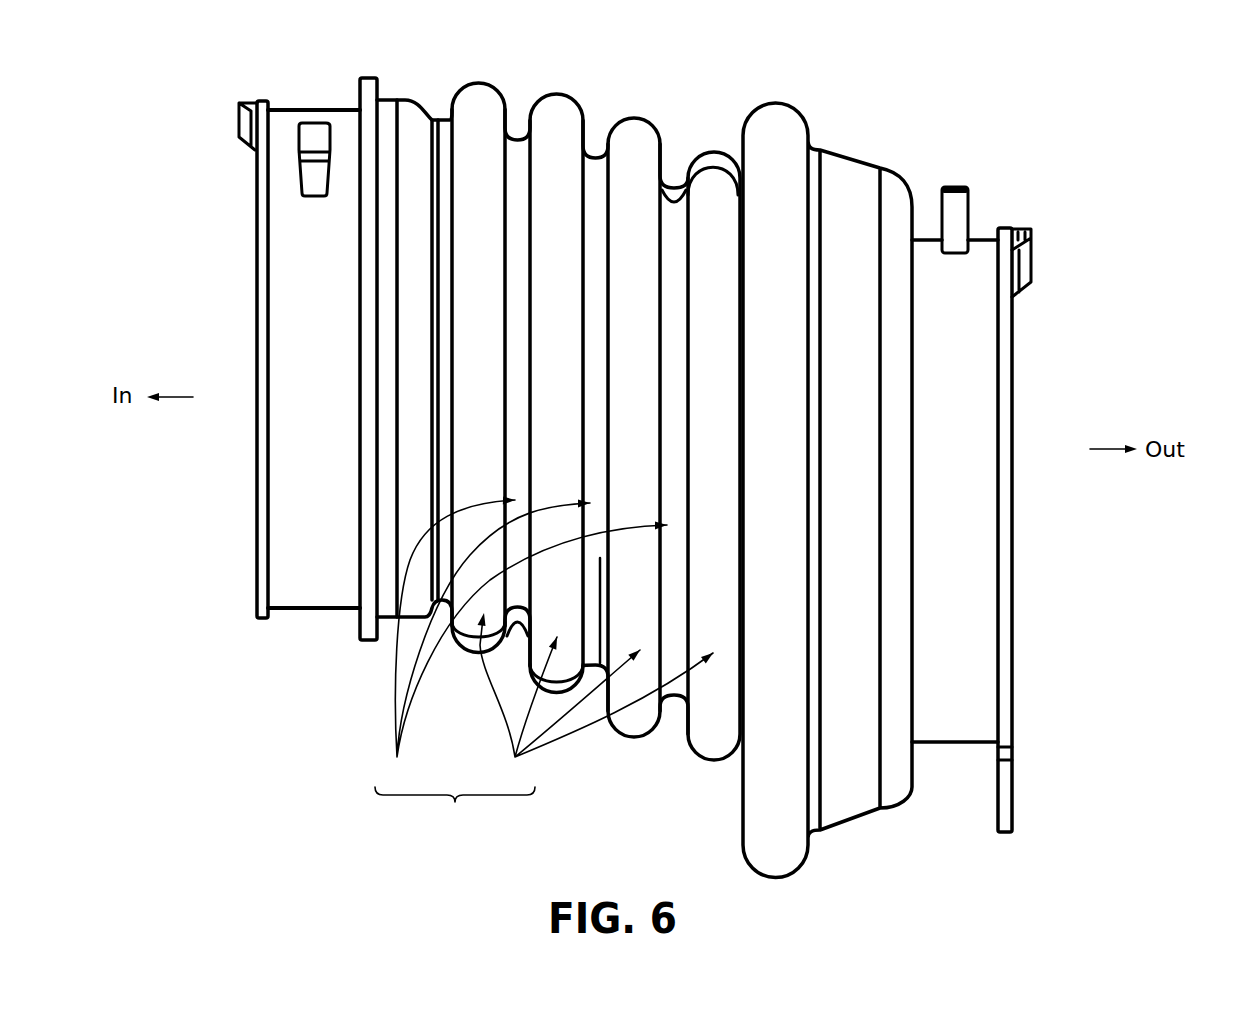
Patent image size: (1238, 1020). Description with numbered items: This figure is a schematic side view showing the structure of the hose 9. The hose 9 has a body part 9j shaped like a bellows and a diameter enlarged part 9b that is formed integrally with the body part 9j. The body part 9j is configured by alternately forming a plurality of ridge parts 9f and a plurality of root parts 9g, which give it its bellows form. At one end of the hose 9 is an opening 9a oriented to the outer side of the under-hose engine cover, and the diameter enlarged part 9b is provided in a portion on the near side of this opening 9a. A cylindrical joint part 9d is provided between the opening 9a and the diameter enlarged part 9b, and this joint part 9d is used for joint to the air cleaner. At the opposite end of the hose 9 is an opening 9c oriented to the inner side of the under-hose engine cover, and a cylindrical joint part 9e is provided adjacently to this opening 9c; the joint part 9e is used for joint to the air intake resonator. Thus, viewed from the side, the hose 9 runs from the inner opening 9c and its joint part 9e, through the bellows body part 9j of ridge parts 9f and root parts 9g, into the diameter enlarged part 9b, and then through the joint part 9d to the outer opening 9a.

The hose 9 is at (634, 137).
The opening 9a is at (1023, 336).
The diameter enlarged part 9b is at (791, 94).
The opening 9c is at (233, 216).
The joint part 9d is at (983, 216).
The joint part 9e is at (306, 100).
The ridge parts 9f is at (596, 700).
The root parts 9g is at (523, 642).
The body part 9j is at (455, 813).